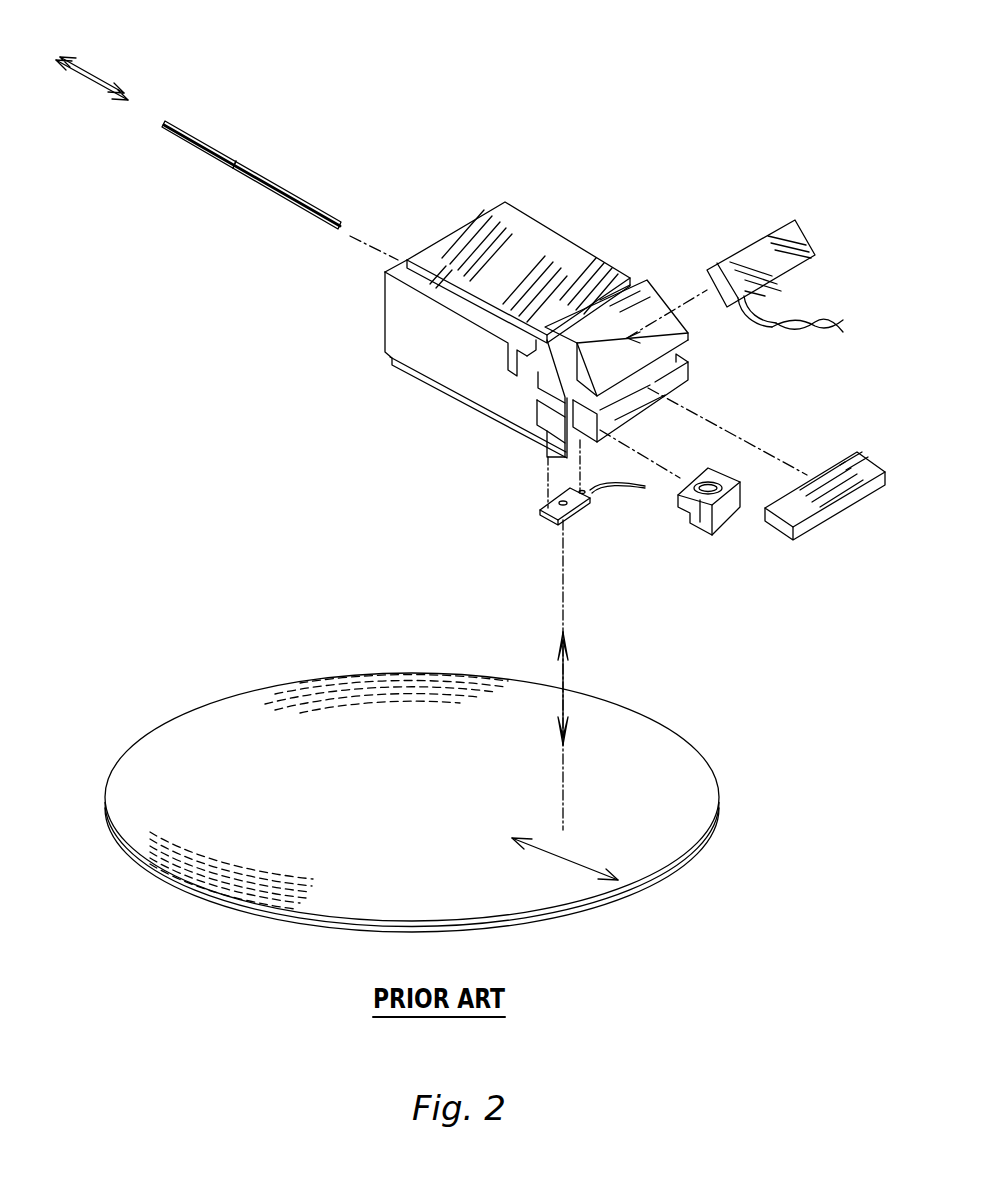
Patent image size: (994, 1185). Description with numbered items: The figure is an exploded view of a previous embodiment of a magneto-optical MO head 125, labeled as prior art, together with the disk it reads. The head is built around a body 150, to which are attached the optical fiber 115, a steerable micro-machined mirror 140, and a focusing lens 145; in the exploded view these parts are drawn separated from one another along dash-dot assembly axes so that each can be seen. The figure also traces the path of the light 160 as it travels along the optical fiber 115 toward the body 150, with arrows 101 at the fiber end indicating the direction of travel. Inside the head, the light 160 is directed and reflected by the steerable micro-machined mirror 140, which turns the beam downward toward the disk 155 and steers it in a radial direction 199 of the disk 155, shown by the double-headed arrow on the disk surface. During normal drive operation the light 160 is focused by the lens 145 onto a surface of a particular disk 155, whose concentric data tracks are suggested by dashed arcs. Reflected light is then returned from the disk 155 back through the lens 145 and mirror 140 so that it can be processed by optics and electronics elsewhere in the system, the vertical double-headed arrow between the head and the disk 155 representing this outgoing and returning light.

The MO head 125 is at (356, 31).
The light propagation direction 101 is at (77, 68).
The light 160 is at (259, 181).
The optical fiber 115 is at (283, 203).
The body 150 is at (407, 318).
The steerable micro-machined mirror 140 is at (760, 236).
The focusing lens 145 is at (712, 520).
The disk 155 is at (683, 737).
The radial direction 199 is at (583, 860).